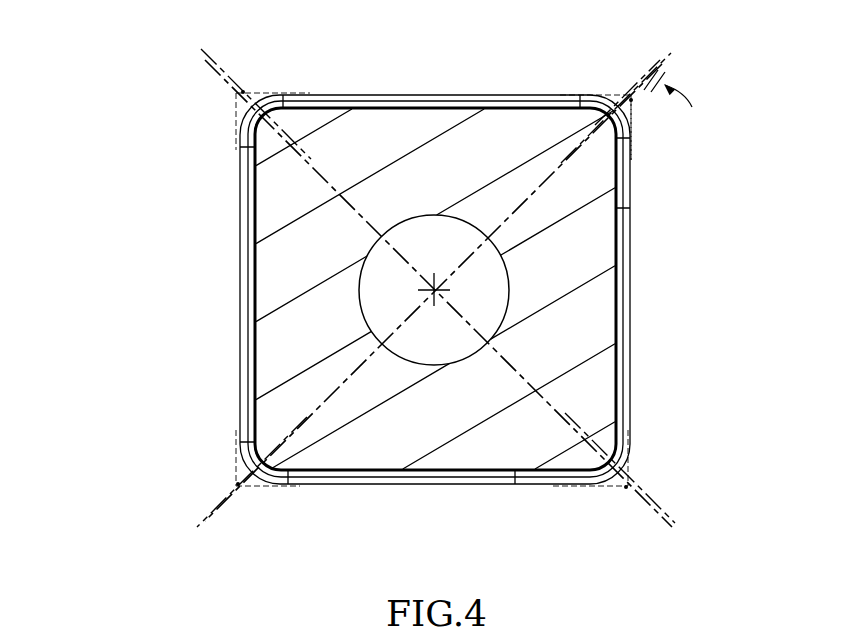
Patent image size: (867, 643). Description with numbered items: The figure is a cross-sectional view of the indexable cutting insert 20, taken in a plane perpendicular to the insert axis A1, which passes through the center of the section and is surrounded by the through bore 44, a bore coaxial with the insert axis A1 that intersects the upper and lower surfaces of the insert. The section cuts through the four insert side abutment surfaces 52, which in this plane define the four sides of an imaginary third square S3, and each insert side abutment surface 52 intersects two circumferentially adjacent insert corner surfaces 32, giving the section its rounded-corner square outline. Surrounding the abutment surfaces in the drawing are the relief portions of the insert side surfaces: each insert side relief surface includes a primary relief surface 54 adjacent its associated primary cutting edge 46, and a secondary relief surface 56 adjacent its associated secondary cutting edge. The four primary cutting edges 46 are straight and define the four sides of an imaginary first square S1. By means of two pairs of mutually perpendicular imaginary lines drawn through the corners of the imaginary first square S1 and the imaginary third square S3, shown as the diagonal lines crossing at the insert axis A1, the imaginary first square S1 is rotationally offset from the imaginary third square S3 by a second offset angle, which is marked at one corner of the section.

The indexable cutting insert 20 is at (210, 181).
The insert corner surface 32 is at (240, 116).
The through bore 44 is at (450, 351).
The primary cutting edge 46 is at (248, 272).
The insert side abutment surface 52 is at (254, 331).
The primary relief surface 54 is at (240, 243).
The secondary relief surface 56 is at (315, 94).
The insert axis A1 is at (438, 290).
The imaginary first square S1 is at (633, 128).
The imaginary third square S3 is at (596, 98).